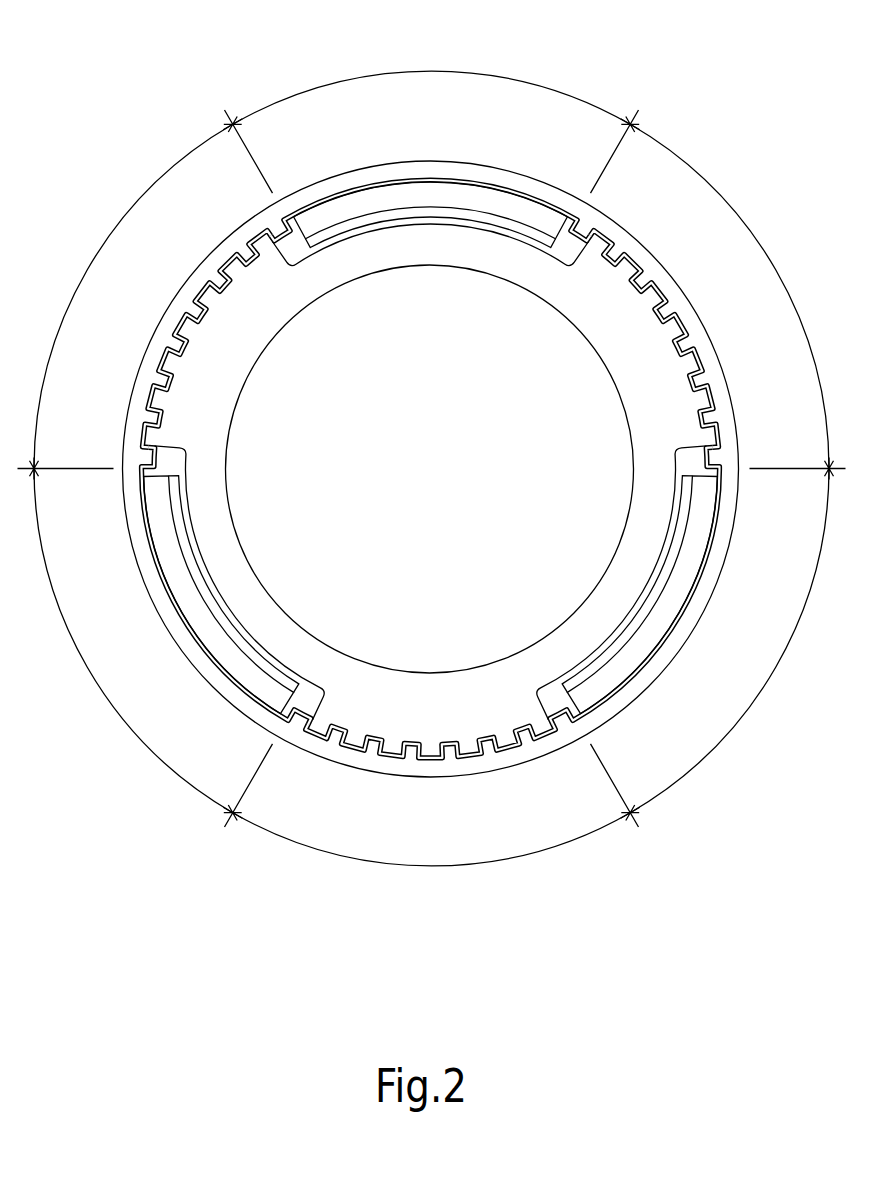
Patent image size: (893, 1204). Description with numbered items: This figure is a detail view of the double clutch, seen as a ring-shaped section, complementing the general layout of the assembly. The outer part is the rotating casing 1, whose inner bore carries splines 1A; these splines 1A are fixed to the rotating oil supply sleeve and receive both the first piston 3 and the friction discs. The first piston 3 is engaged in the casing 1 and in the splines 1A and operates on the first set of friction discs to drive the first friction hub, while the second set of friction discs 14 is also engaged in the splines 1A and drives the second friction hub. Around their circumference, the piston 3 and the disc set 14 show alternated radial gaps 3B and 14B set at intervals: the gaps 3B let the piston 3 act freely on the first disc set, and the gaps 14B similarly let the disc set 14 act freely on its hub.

The rotating casing 1 is at (330, 191).
The splines 1A is at (687, 343).
The first piston 3 is at (485, 204).
The radial gaps 3B is at (100, 250).
The second set of friction discs 14 is at (676, 408).
The radial gaps 14B is at (432, 71).